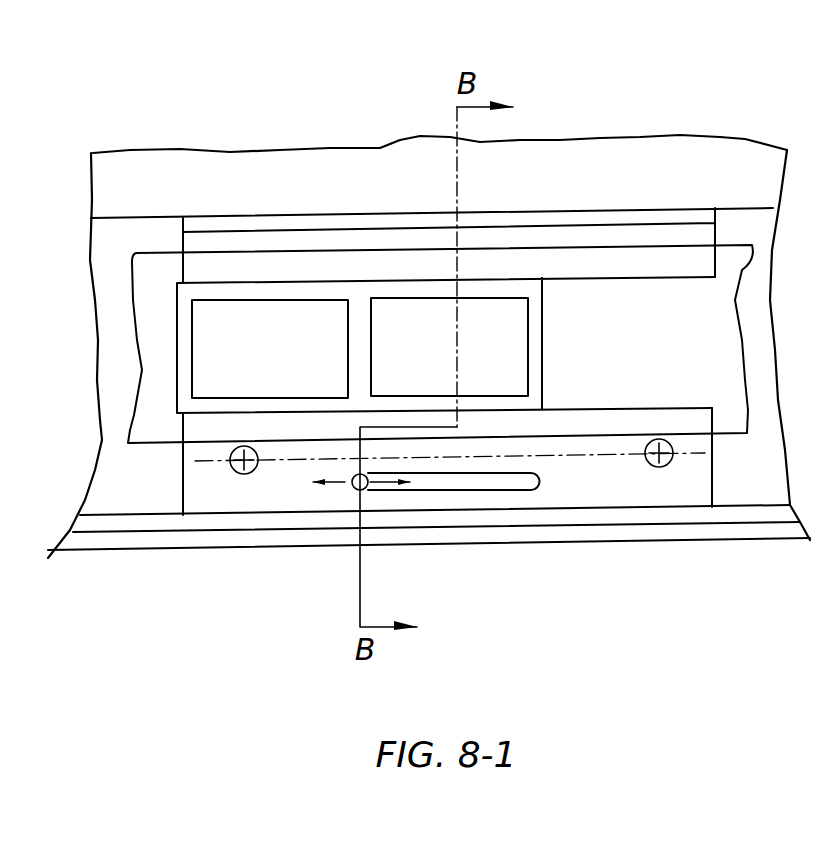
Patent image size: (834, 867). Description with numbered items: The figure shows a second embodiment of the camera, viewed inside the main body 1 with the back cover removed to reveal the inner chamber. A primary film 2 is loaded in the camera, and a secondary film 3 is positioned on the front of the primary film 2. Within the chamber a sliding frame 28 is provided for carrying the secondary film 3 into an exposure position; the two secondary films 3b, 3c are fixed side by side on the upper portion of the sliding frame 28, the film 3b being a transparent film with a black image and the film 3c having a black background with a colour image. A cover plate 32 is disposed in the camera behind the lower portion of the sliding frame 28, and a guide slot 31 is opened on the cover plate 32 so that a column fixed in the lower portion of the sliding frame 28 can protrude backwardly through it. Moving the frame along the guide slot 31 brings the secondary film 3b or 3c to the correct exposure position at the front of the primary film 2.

The main body 1 is at (622, 165).
The primary film 2 is at (735, 417).
The secondary film 3 is at (360, 221).
The secondary film 3b is at (270, 349).
The secondary film 3c is at (449, 347).
The sliding frame 28 is at (355, 297).
The guide slot 31 is at (487, 482).
The cover plate 32 is at (638, 498).